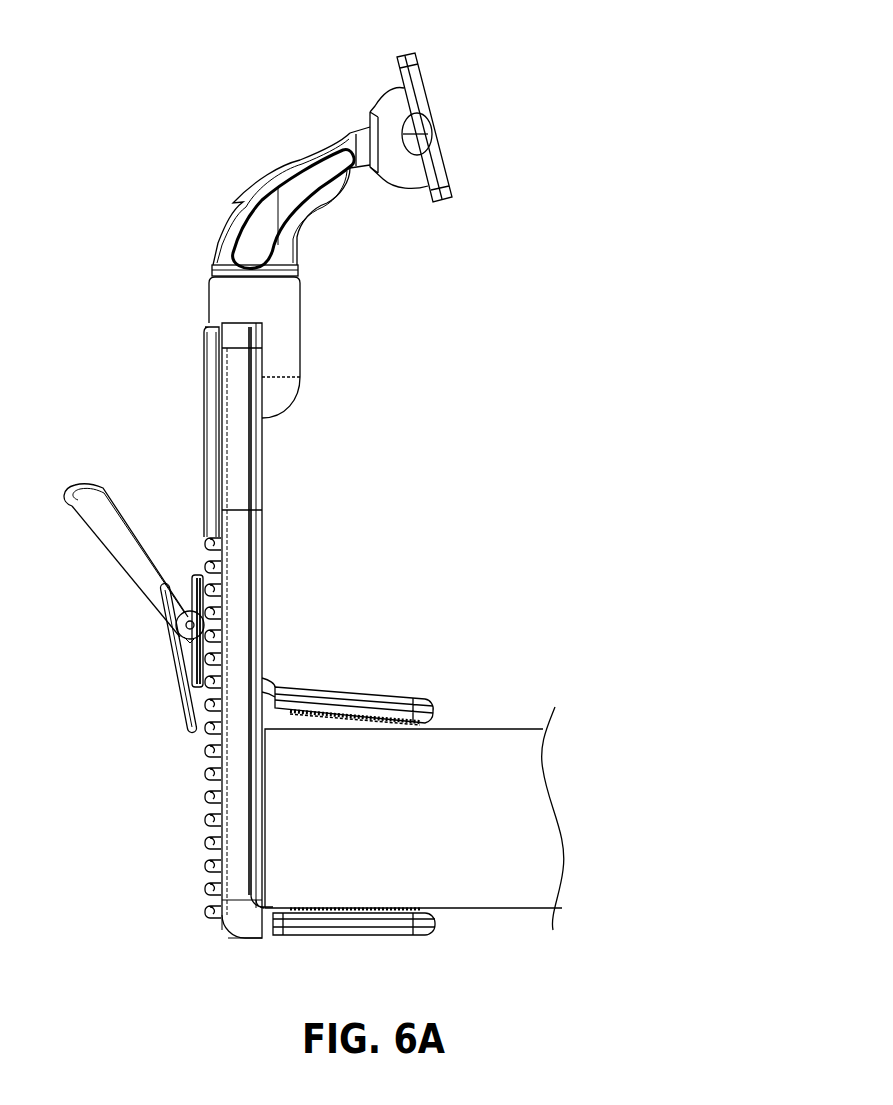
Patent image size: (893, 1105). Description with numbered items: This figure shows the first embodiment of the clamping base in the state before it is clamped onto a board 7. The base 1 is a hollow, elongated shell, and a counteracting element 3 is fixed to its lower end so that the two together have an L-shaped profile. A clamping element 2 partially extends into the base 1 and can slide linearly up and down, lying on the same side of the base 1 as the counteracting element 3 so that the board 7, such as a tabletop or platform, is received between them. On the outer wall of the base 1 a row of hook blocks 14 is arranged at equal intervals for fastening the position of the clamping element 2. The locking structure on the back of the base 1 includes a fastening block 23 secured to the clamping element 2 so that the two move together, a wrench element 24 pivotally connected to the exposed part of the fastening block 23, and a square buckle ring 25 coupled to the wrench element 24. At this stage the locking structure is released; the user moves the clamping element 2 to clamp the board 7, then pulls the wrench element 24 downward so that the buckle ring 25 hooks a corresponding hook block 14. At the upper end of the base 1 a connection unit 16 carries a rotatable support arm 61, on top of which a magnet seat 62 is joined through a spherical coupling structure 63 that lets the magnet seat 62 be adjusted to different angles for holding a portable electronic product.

The base 1 is at (237, 603).
The clamping element 2 is at (416, 700).
The counteracting element 3 is at (418, 936).
The board 7 is at (490, 741).
The hook block 14 is at (205, 766).
The connection unit 16 is at (284, 332).
The fastening block 23 is at (195, 587).
The wrench element 24 is at (98, 503).
The buckle ring 25 is at (178, 697).
The support arm 61 is at (278, 180).
The magnet seat 62 is at (420, 108).
The spherical coupling structure 63 is at (400, 158).